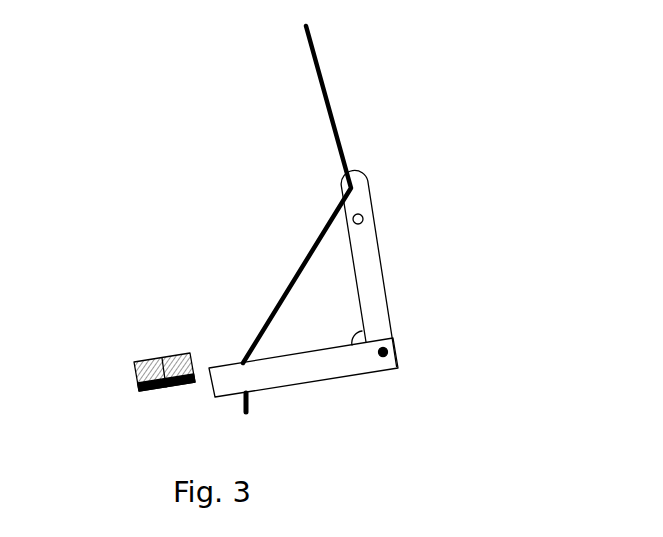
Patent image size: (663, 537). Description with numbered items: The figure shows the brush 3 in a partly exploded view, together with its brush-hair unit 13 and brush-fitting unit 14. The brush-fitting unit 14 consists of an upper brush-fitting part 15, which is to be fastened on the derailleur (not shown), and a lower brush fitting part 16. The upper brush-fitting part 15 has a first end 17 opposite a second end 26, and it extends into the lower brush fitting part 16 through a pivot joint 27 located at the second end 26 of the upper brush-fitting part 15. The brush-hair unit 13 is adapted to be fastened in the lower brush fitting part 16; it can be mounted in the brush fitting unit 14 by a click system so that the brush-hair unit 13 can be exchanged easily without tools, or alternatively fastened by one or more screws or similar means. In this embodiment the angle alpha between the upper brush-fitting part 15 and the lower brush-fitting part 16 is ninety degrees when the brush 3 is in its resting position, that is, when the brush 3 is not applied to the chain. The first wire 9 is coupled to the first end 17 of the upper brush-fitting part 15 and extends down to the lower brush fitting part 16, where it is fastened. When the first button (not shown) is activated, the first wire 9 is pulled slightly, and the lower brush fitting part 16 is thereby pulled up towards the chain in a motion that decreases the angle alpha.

The brush 3 is at (155, 133).
The first wire 9 is at (330, 97).
The brush-hair unit 13 is at (140, 360).
The brush-fitting unit 14 is at (313, 382).
The upper brush-fitting part 15 is at (381, 260).
The lower brush fitting part 16 is at (207, 387).
The first end 17 is at (363, 180).
The second end 26 is at (392, 333).
The pivot joint 27 is at (397, 353).